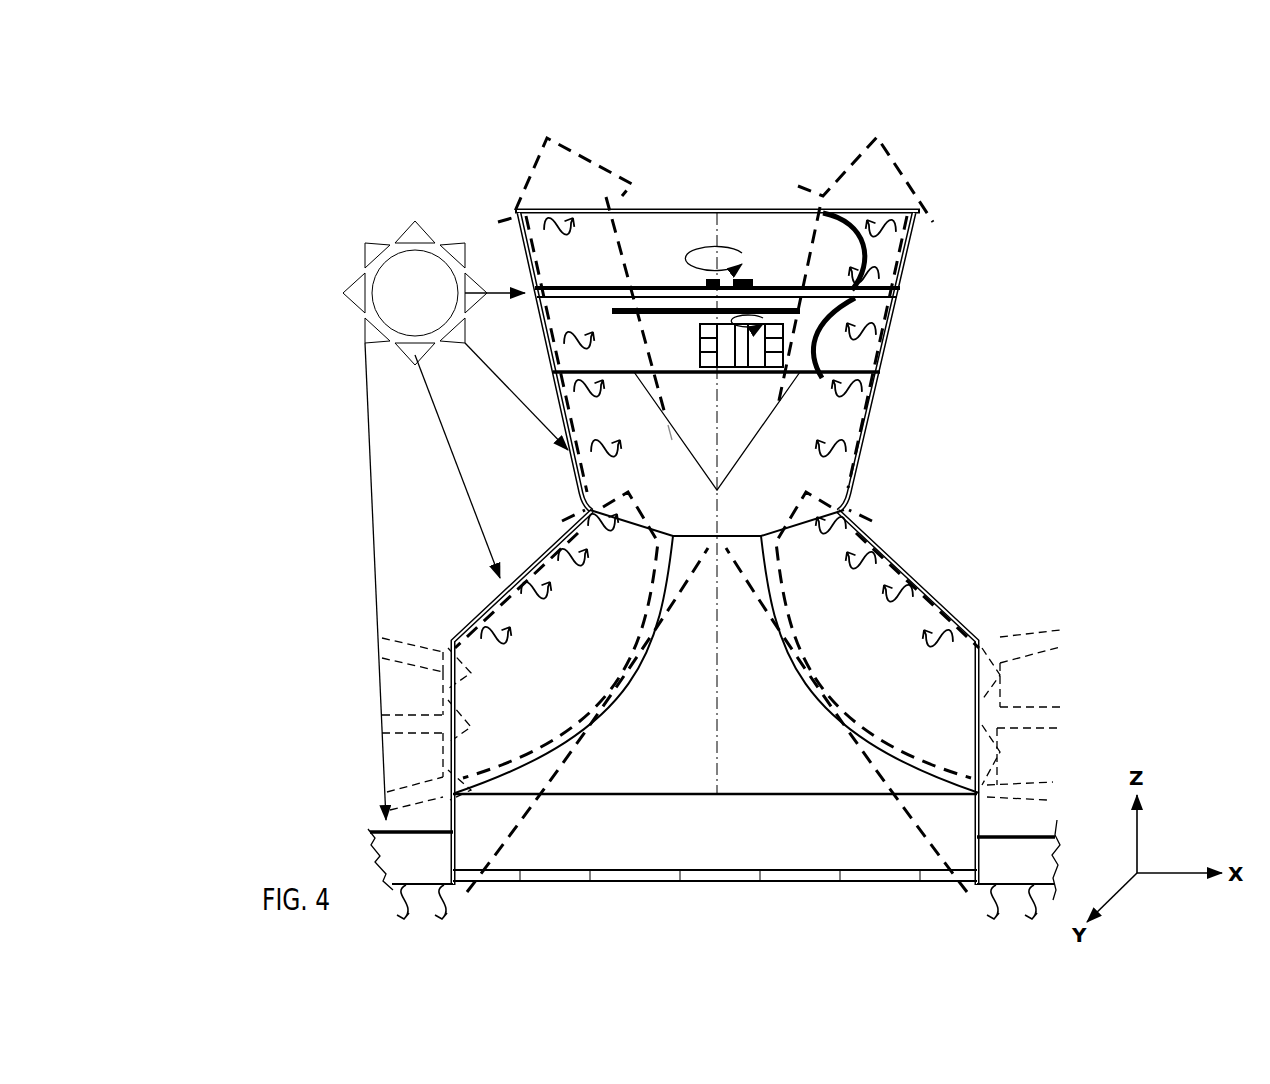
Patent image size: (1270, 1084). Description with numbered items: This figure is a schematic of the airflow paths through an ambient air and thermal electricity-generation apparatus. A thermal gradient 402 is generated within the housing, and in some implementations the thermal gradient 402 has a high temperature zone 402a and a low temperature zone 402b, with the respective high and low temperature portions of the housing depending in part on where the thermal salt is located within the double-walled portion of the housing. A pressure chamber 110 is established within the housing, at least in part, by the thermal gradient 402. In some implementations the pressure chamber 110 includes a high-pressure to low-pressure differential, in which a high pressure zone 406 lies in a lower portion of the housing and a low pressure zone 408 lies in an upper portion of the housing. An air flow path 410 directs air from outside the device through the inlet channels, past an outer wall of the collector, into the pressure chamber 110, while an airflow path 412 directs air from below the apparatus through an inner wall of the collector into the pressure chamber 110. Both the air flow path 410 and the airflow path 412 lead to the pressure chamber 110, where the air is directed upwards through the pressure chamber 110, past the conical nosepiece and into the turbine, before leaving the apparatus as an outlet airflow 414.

The pressure chamber 110 is at (717, 504).
The thermal gradient 402 is at (238, 227).
The high temperature zone 402a is at (357, 227).
The low temperature zone 402b is at (363, 500).
The high pressure zone 406 is at (988, 537).
The low pressure zone 408 is at (940, 208).
The air flow path 410 is at (887, 650).
The airflow path 412 is at (775, 737).
The outlet airflow 414 is at (580, 157).